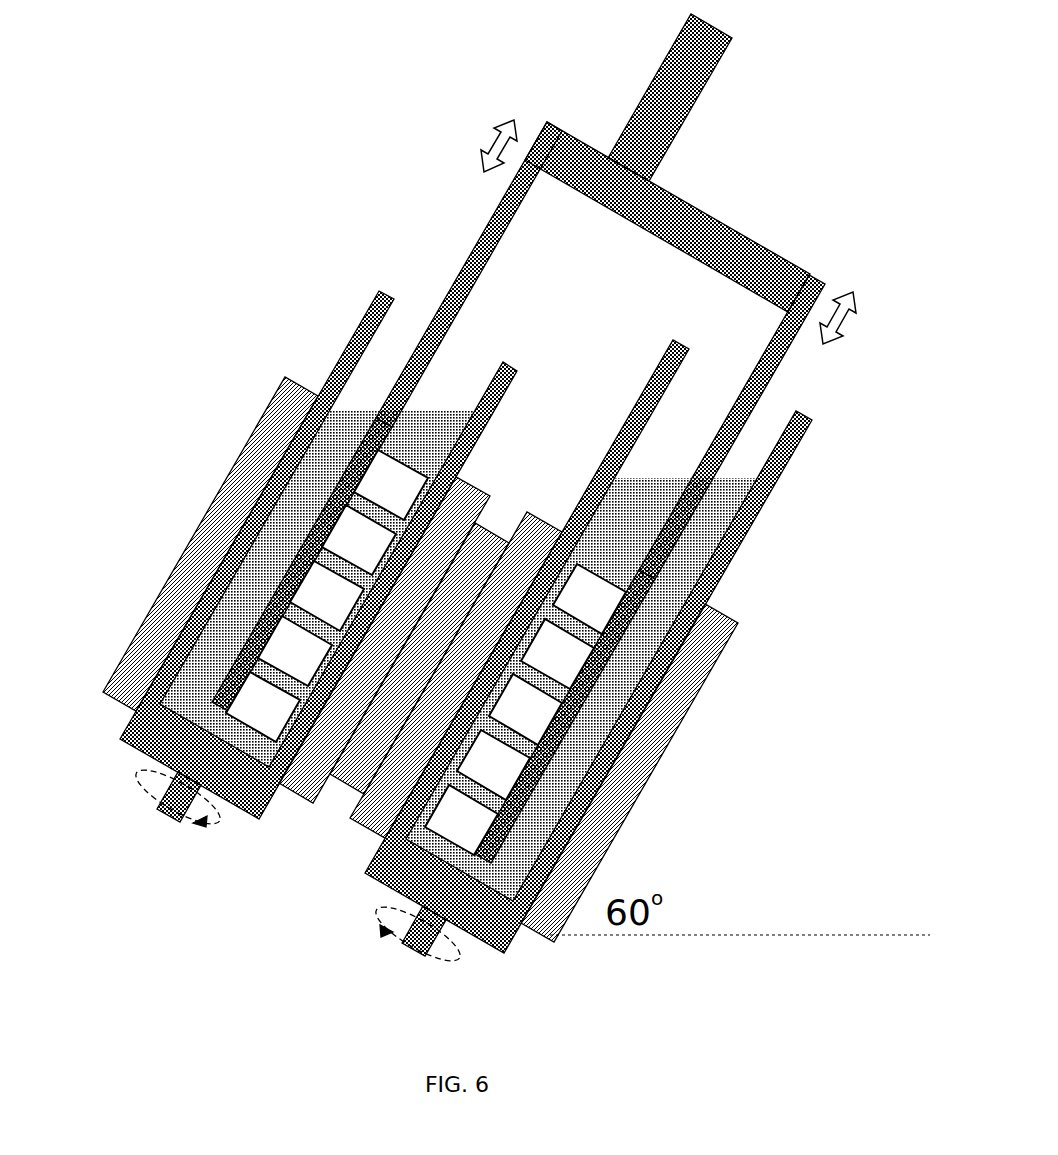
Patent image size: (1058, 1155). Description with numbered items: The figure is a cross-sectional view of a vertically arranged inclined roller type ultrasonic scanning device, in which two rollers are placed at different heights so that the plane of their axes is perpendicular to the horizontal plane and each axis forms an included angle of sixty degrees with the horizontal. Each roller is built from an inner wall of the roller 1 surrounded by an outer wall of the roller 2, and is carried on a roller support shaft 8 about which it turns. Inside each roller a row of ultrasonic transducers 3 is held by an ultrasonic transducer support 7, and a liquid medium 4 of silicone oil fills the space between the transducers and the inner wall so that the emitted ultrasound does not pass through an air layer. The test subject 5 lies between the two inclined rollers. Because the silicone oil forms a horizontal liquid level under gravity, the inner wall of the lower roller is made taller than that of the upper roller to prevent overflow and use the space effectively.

The inner wall of the roller 1 is at (137, 712).
The outer wall of the roller 2 is at (158, 612).
The ultrasonic transducer 3 is at (426, 652).
The liquid medium 4 is at (433, 636).
The test subject 5 is at (490, 528).
The ultrasonic transducer support 7 is at (600, 296).
The roller support shaft 8 is at (165, 830).